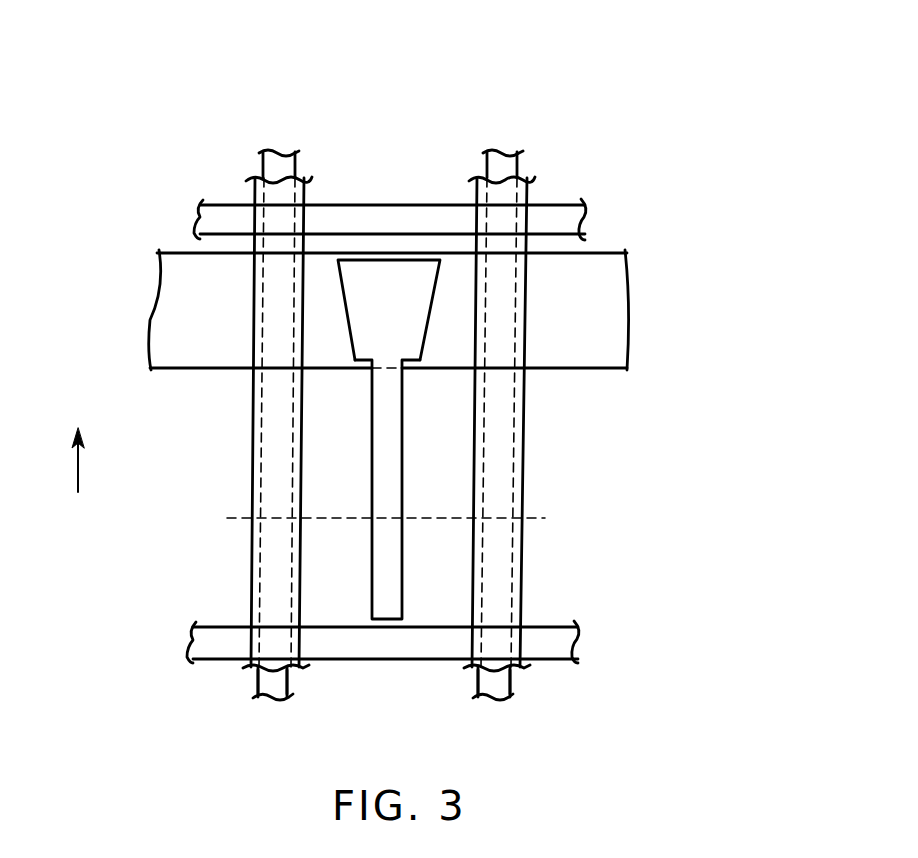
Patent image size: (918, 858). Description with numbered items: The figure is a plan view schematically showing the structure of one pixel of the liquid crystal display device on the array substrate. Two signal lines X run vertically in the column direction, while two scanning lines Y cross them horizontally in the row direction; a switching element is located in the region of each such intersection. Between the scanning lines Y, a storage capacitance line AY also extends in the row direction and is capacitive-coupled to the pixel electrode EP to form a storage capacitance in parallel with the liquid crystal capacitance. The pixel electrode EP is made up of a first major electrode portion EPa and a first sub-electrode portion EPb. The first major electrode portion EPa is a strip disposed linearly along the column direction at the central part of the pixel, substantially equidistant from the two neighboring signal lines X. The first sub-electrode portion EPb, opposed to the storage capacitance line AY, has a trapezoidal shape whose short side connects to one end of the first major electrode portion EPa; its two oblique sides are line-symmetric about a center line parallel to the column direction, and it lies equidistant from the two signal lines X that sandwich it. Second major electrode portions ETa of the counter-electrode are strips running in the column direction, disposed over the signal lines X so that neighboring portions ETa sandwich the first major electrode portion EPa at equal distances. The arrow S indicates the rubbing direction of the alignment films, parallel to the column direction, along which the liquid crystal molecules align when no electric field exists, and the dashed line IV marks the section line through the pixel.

The signal line X is at (284, 162).
The scanning line Y is at (200, 216).
The storage capacitance line AY is at (179, 293).
The pixel electrode EP is at (263, 439).
The first sub-electrode portion EPb is at (365, 305).
The first major electrode portion EPa is at (382, 577).
The section line IV- IV is at (387, 519).
The rubbing direction S is at (77, 448).
The second major electrode portion ETa is at (282, 692).